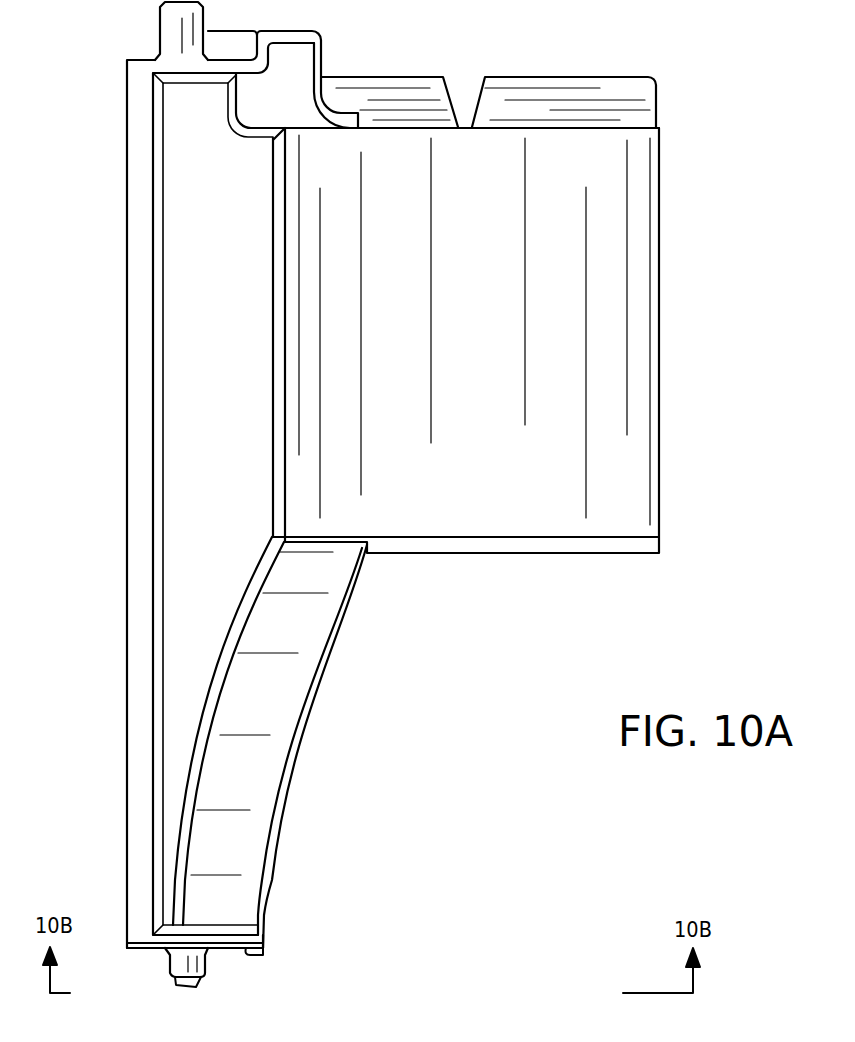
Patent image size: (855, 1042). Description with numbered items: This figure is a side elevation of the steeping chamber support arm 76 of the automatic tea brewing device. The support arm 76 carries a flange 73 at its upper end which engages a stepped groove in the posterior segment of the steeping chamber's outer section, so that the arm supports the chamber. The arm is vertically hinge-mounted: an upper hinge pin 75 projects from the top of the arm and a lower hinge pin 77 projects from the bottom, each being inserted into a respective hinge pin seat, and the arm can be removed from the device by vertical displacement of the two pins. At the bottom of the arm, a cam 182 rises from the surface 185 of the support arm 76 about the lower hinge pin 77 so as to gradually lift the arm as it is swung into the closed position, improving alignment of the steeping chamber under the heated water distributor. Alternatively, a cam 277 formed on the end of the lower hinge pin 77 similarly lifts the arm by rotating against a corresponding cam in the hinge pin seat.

The flange 73 is at (539, 88).
The upper hinge pin 75 is at (160, 30).
The steeping chamber support arm 76 is at (288, 686).
The lower hinge pin 77 is at (167, 955).
The cam 182 is at (251, 952).
The surface 185 is at (218, 952).
The cam 277 is at (188, 978).